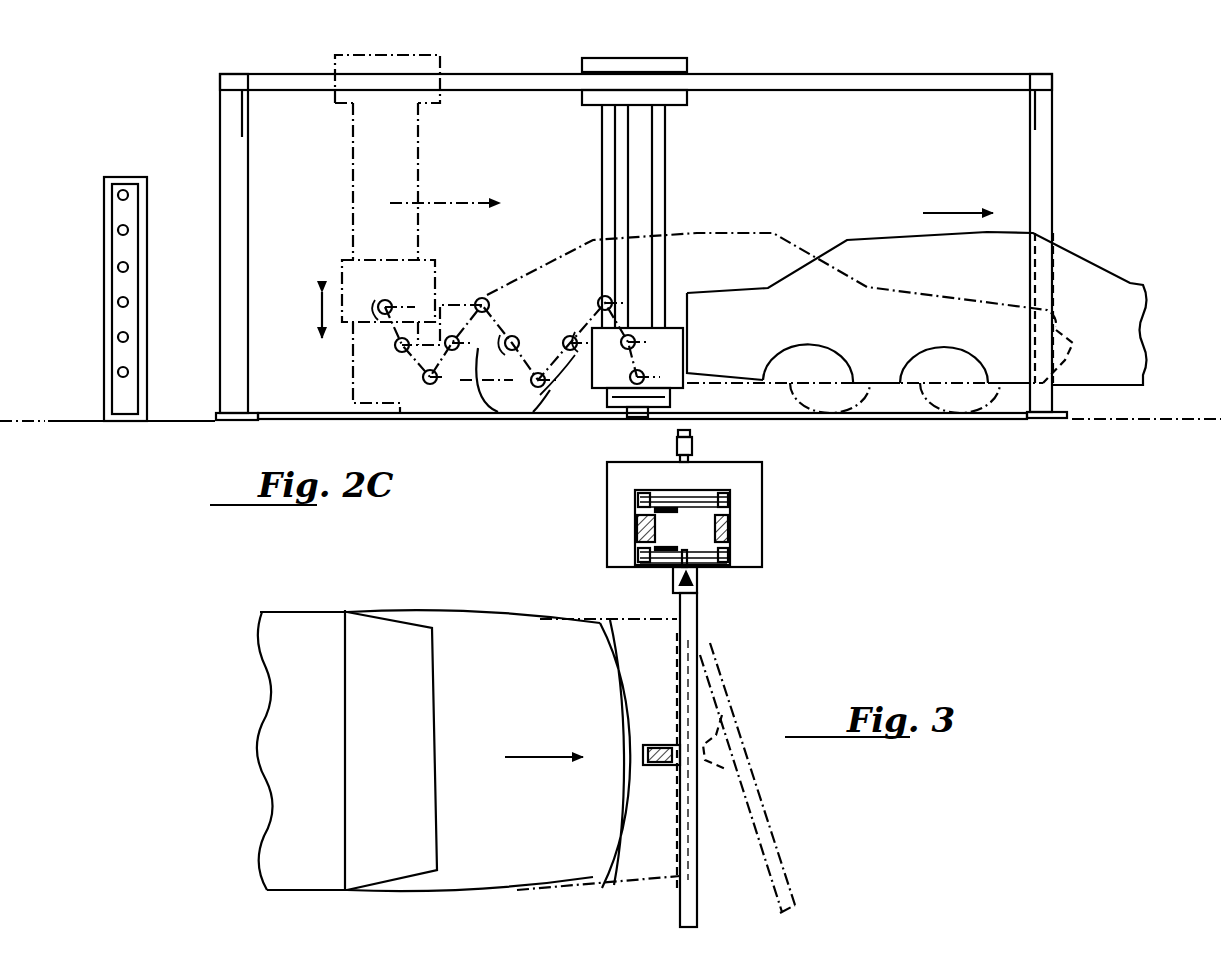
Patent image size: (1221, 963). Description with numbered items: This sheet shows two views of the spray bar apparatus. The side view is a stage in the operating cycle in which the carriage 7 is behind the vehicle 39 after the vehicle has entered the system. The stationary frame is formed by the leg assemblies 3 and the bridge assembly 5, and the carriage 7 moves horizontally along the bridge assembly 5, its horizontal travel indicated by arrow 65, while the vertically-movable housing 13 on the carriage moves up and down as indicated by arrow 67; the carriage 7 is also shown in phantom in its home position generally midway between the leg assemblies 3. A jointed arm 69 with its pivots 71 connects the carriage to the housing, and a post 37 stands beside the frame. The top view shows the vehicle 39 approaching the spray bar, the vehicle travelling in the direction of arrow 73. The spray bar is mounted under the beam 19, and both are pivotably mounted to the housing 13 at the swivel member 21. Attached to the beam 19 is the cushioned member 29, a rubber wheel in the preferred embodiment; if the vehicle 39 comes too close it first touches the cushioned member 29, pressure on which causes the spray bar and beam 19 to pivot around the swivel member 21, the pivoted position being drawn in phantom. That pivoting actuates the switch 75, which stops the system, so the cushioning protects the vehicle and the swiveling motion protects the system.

In FIG. 2C, the leg assemblies 3 is at (233, 177).
In FIG. 2C, the bridge assembly 5 is at (860, 82).
In FIG. 2C, the carriage 7 is at (352, 100).
In FIG. 3, the vertically-movable housing 13 is at (730, 527).
In FIG. 3, the beam 19 is at (690, 623).
In FIG. 3, the swivel member 21 is at (690, 603).
In FIG. 3, the cushioned member 29 is at (650, 743).
In FIG. 2C, the post with mounting holes 37 is at (121, 213).
In FIG. 2C, the vehicle 39 is at (705, 240).
In FIG. 3, the vehicle 39 is at (483, 632).
In FIG. 2C, the horizontal motion direction 65 is at (433, 203).
In FIG. 2C, the vertical motion direction 67 is at (312, 317).
In FIG. 2C, the articulated arm 69 is at (516, 345).
In FIG. 2C, the arm joints 71 is at (507, 303).
In FIG. 3, the vehicle travel direction 73 is at (535, 760).
In FIG. 3, the switch 75 is at (697, 573).